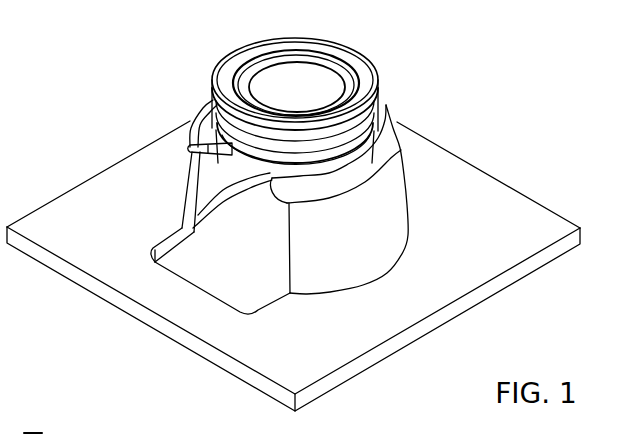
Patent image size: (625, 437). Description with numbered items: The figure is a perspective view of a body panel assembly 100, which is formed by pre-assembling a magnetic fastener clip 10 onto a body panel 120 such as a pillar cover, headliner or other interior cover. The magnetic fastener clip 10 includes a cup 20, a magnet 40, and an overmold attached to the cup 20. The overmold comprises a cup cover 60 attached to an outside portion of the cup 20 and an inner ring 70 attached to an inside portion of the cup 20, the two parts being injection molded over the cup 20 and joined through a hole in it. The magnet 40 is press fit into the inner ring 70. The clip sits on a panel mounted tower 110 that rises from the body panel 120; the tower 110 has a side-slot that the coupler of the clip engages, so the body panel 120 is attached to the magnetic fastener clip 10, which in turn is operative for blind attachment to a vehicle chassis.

The magnetic fastener clip 10 is at (198, 62).
The cup 20 is at (352, 62).
The magnet 40 is at (293, 62).
The cup cover 60 is at (380, 107).
The inner ring 70 is at (323, 55).
The body panel assembly 100 is at (126, 125).
The panel mounted tower 110 is at (394, 128).
The body panel 120 is at (435, 153).